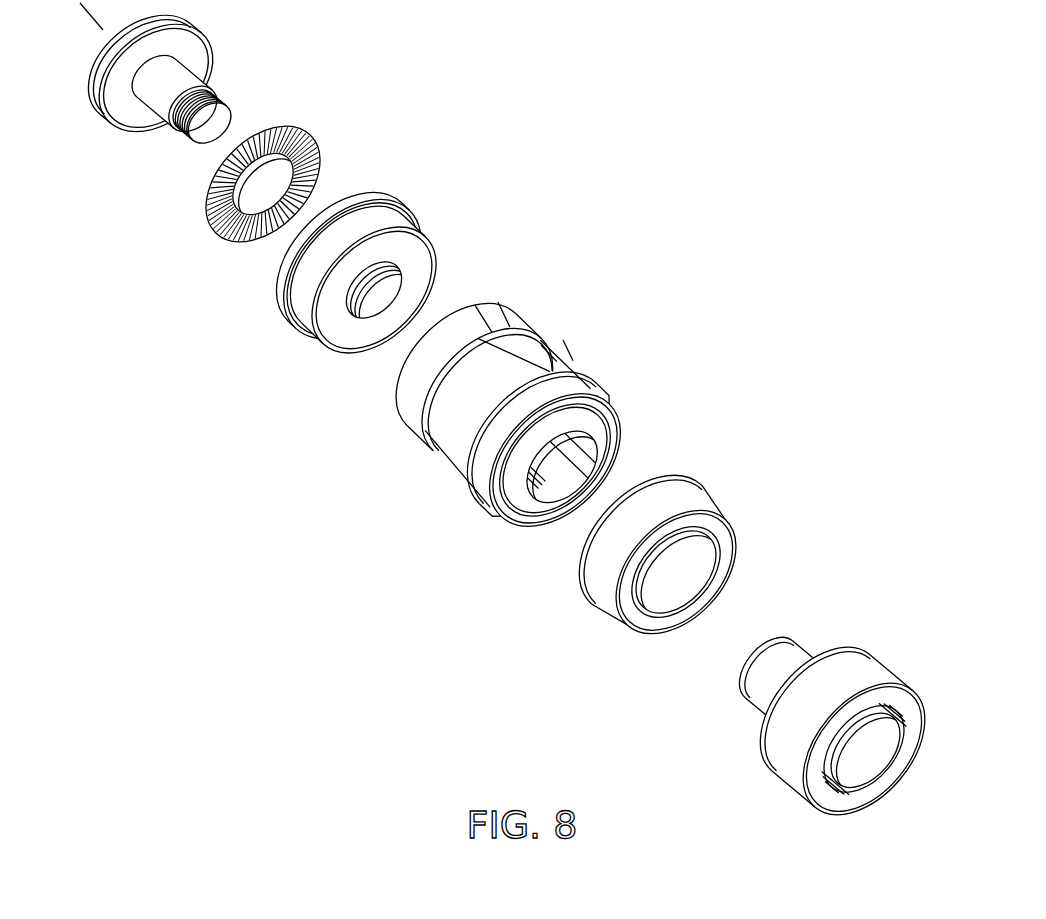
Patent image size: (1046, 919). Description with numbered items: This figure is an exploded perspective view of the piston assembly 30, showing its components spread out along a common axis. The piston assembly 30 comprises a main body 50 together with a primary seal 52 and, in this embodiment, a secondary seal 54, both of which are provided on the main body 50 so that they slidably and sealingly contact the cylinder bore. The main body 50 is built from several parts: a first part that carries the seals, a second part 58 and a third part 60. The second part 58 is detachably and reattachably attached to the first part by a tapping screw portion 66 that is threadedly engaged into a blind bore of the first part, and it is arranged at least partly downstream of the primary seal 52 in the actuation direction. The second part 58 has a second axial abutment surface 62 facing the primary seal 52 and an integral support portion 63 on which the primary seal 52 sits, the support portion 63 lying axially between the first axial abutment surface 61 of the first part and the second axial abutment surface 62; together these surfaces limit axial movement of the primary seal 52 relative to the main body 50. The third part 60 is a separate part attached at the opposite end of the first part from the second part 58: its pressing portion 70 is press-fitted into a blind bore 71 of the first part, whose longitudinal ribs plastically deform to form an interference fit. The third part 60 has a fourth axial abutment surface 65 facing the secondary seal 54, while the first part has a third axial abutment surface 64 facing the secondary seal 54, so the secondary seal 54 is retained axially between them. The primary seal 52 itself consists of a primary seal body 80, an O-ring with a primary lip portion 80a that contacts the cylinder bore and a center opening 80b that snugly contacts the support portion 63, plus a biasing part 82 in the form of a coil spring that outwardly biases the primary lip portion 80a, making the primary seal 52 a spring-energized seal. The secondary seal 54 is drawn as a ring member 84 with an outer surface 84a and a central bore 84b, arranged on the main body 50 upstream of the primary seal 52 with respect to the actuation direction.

The piston assembly 30 is at (693, 330).
The main body 50 is at (512, 417).
The primary seal 52 is at (308, 248).
The secondary seal 54 is at (674, 560).
The second part 58 is at (175, 95).
The third part 60 is at (826, 694).
The first axial abutment surface 61 is at (467, 375).
The second axial abutment surface 62 is at (149, 74).
The support portion 63 is at (166, 87).
The third axial abutment surface 64 is at (543, 443).
The fourth axial abutment surface 65 is at (773, 622).
The tapping screw portion 66 is at (200, 115).
The pressing portion 70 is at (771, 670).
The blind bore 71 is at (562, 467).
The primary seal body 80 is at (339, 274).
The primary lip portion 80a is at (338, 255).
The center opening 80b is at (374, 289).
The biasing part 82 is at (227, 250).
The washer body 84 is at (674, 552).
The outer surface 84a is at (642, 541).
The washer bore 84b is at (675, 572).